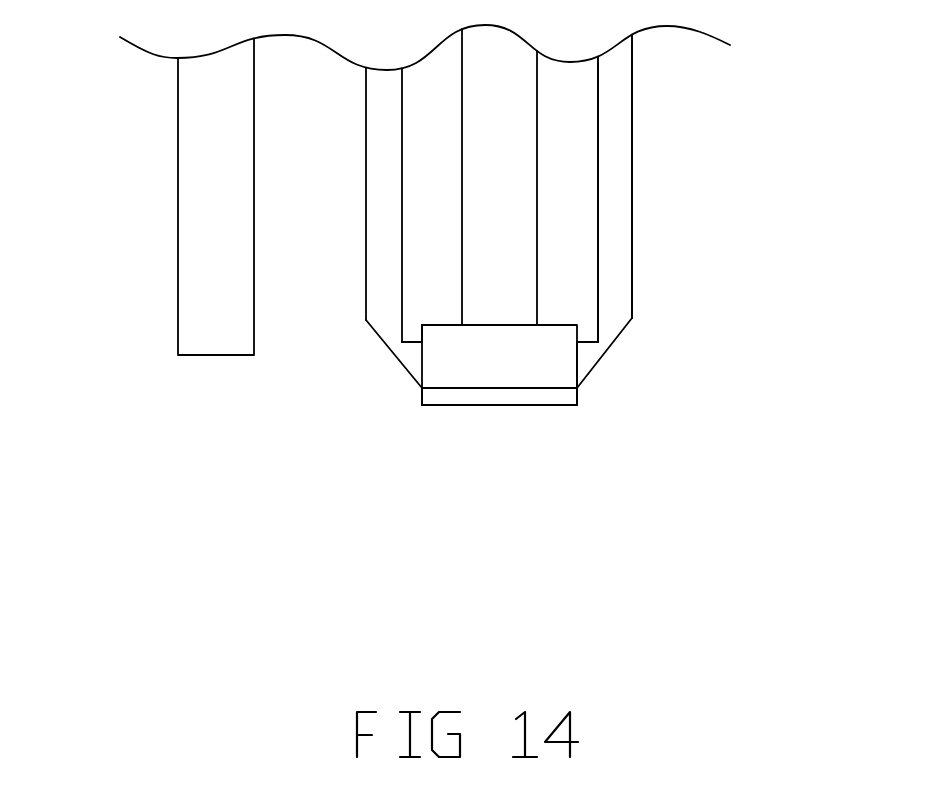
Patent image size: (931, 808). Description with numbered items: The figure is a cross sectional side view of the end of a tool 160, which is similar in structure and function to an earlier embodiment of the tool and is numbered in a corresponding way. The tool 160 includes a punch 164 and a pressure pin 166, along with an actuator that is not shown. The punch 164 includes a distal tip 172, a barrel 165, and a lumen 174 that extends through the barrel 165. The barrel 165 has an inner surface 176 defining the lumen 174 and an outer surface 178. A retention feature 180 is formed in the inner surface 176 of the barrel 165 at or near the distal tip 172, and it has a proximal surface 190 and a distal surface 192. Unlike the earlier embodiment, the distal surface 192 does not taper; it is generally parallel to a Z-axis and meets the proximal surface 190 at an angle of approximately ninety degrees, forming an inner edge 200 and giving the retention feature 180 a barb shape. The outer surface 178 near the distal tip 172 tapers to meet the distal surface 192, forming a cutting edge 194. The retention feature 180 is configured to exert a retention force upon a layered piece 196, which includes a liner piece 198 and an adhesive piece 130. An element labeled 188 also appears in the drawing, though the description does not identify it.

The tool 160 is at (675, 100).
The conductive line 188 is at (190, 169).
The barrel 165 is at (377, 111).
The pressure pin 166 is at (468, 164).
The lumen 174 is at (434, 252).
The proximal surface 190 is at (410, 342).
The cutting edge 194 is at (422, 388).
The distal surface 192 is at (420, 363).
The inner edge 200 is at (562, 345).
The liner piece 198 is at (538, 335).
The retention feature 180 is at (592, 349).
The distal tip 172 is at (582, 368).
The adhesive piece 130 is at (570, 397).
The layered piece 196 is at (577, 405).
The punch 164 is at (620, 152).
The outer surface 178 is at (632, 198).
The inner surface 176 is at (597, 222).